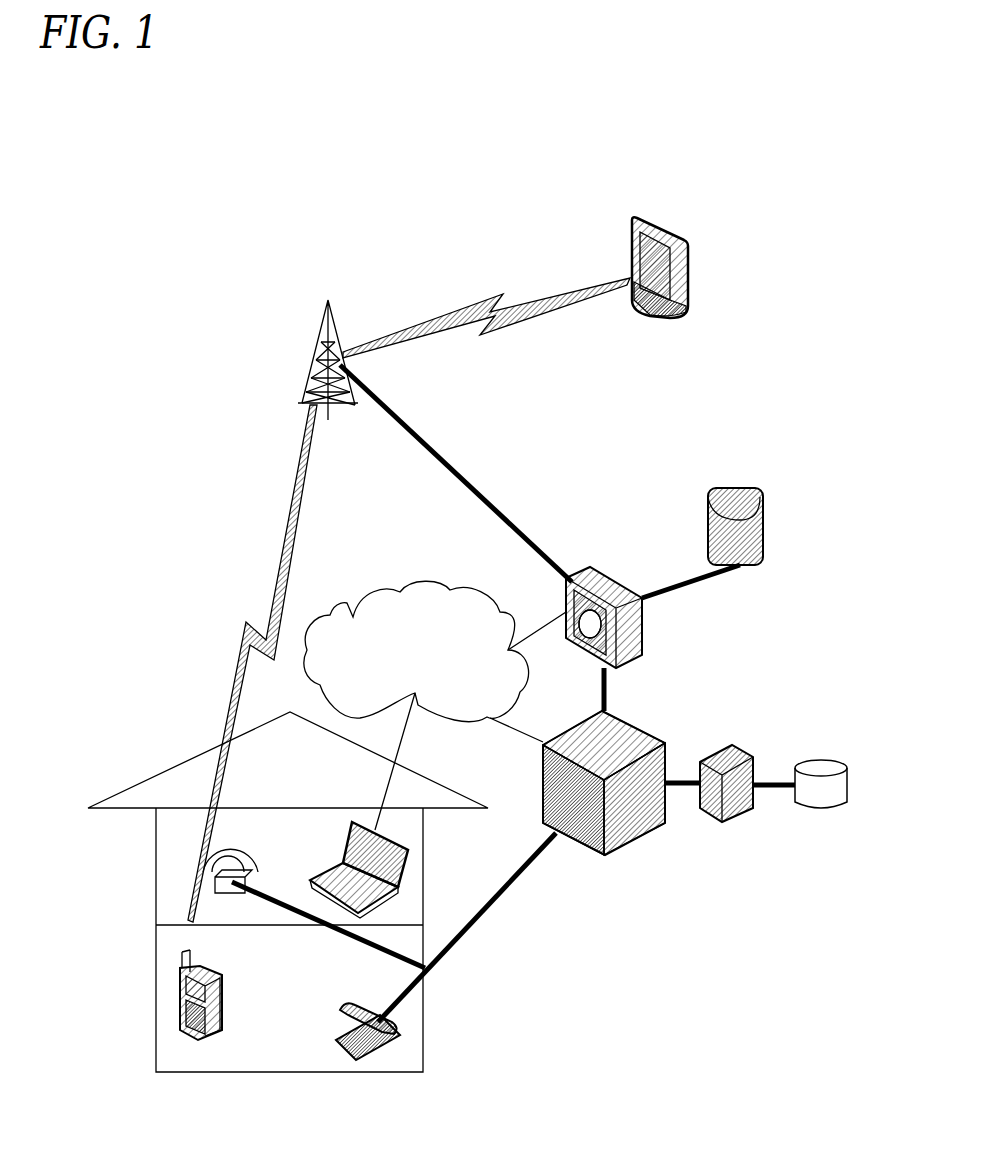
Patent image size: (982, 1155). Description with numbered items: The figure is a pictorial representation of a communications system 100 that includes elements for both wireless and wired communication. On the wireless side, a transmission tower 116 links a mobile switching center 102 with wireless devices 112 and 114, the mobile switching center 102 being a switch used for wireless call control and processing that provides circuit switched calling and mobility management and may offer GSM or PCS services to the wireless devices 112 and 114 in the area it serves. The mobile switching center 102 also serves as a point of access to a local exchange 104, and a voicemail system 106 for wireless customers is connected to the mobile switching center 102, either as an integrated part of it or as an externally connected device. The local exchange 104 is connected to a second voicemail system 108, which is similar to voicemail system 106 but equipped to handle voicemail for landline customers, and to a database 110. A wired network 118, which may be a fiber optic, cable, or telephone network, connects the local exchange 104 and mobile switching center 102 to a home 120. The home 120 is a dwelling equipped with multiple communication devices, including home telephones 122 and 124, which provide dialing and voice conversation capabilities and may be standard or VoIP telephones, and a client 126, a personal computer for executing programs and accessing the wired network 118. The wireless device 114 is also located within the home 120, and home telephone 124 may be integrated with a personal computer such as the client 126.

The communications system 100 is at (119, 222).
The mobile switching center 102 is at (590, 567).
The local exchange 104 is at (608, 857).
The voicemail system 106 is at (730, 487).
The voicemail system 108 is at (745, 818).
The database 110 is at (798, 760).
The wireless device 112 is at (688, 238).
The wireless device 114 is at (187, 1028).
The transmission tower 116 is at (303, 392).
The wired network 118 is at (400, 673).
The home 120 is at (152, 770).
The home telephone 122 is at (402, 1046).
The home telephone 124 is at (227, 882).
The client 126 is at (413, 890).